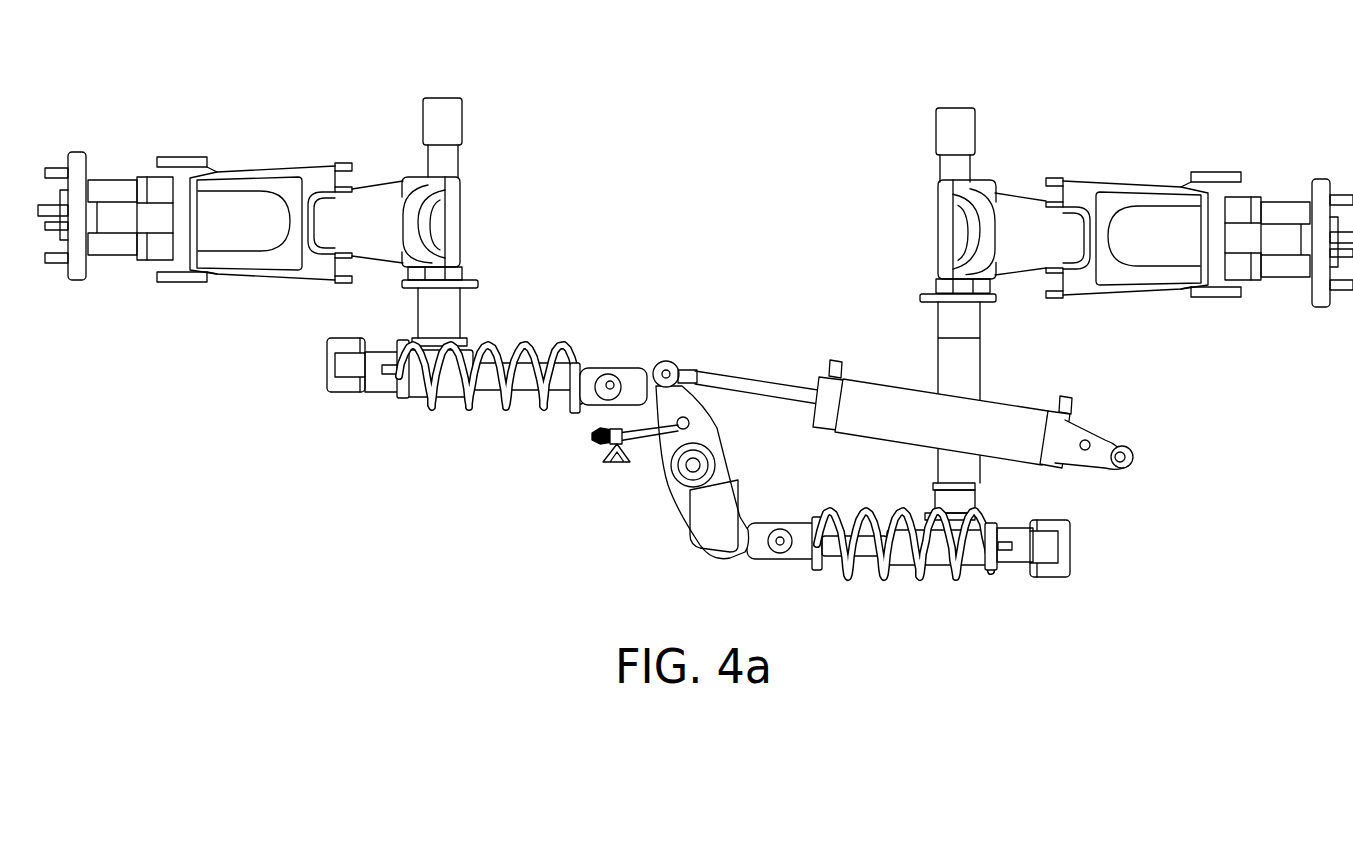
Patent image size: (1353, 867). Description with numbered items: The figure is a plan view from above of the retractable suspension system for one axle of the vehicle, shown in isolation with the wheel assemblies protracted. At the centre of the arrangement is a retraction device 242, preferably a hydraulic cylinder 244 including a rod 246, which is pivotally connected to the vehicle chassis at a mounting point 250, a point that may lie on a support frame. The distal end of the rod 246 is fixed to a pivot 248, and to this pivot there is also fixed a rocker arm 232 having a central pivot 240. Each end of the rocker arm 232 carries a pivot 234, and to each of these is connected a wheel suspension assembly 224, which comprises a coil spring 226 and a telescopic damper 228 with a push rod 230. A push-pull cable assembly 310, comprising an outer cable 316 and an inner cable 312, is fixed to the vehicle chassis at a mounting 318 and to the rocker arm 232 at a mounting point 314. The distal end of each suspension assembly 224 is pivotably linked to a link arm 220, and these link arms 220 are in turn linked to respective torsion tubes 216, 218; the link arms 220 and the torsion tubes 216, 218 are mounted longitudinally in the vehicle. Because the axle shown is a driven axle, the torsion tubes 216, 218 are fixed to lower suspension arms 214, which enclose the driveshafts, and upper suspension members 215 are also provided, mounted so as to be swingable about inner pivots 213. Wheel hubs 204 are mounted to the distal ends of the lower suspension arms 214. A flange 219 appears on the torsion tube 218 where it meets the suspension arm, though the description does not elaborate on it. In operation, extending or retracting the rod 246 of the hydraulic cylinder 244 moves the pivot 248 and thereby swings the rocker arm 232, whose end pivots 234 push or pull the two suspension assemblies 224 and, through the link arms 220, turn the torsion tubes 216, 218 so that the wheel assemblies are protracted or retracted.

The wheel hub 204 is at (1322, 190).
The inner pivot 213 is at (1058, 178).
The lower suspension arm 214 is at (1020, 250).
The upper suspension member 215 is at (1085, 190).
The torsion tube 216 is at (480, 157).
The torsion tube 218 is at (928, 162).
The knuckle flange 219 is at (922, 301).
The link arm 220 is at (346, 393).
The wheel suspension assembly 224 is at (717, 461).
The coil spring 226 is at (889, 564).
The telescopic damper 228 is at (947, 553).
The push rod 230 is at (540, 378).
The rocker arm 232 is at (736, 436).
The pivot 234 is at (609, 381).
The central pivot 240 is at (693, 468).
The retraction device 242 is at (953, 402).
The hydraulic cylinder 244 is at (968, 430).
The rod 246 is at (746, 381).
The pivot 248 is at (667, 373).
The mounting point 250 is at (1132, 459).
The push-pull cable assembly 310 is at (629, 480).
The inner cable 312 is at (648, 438).
The mounting point 314 is at (690, 431).
The outer cable 316 is at (605, 433).
The mounting 318 is at (613, 458).